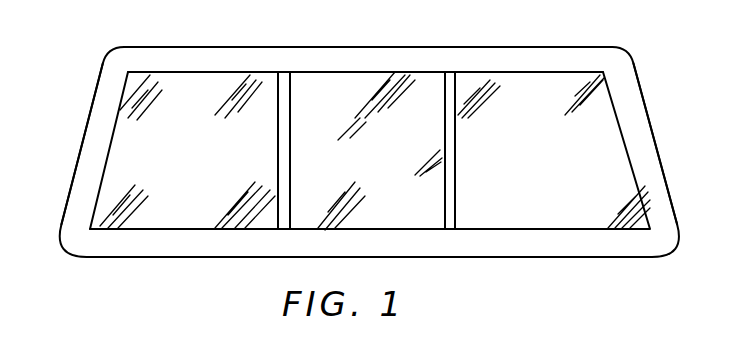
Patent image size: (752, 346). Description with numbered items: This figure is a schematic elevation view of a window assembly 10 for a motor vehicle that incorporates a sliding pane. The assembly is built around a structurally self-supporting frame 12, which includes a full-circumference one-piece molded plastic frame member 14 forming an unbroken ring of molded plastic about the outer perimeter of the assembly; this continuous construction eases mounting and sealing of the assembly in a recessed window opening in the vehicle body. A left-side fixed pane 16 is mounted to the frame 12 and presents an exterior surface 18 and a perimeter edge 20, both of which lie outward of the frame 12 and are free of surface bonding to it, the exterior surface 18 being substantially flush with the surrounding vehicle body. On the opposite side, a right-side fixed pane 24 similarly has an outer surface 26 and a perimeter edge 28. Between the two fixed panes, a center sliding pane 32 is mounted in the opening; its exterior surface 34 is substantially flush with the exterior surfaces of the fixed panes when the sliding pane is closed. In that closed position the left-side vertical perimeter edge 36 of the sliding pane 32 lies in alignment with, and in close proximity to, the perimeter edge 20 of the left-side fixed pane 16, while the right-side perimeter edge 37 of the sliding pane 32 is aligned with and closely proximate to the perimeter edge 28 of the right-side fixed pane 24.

The window assembly 10 is at (96, 66).
The frame 12 is at (514, 46).
The frame member 14 is at (590, 57).
The left-side fixed pane 16 is at (203, 160).
The exterior surface 18 is at (113, 152).
The perimeter edge 20 is at (97, 192).
The right-side fixed pane 24 is at (549, 161).
The outer surface 26 is at (620, 115).
The perimeter edge 28 is at (647, 175).
The center sliding pane 32 is at (378, 170).
The exterior surface 34 is at (353, 85).
The left-side vertical perimeter edge 36 is at (284, 103).
The right-side perimeter edge 37 is at (458, 186).